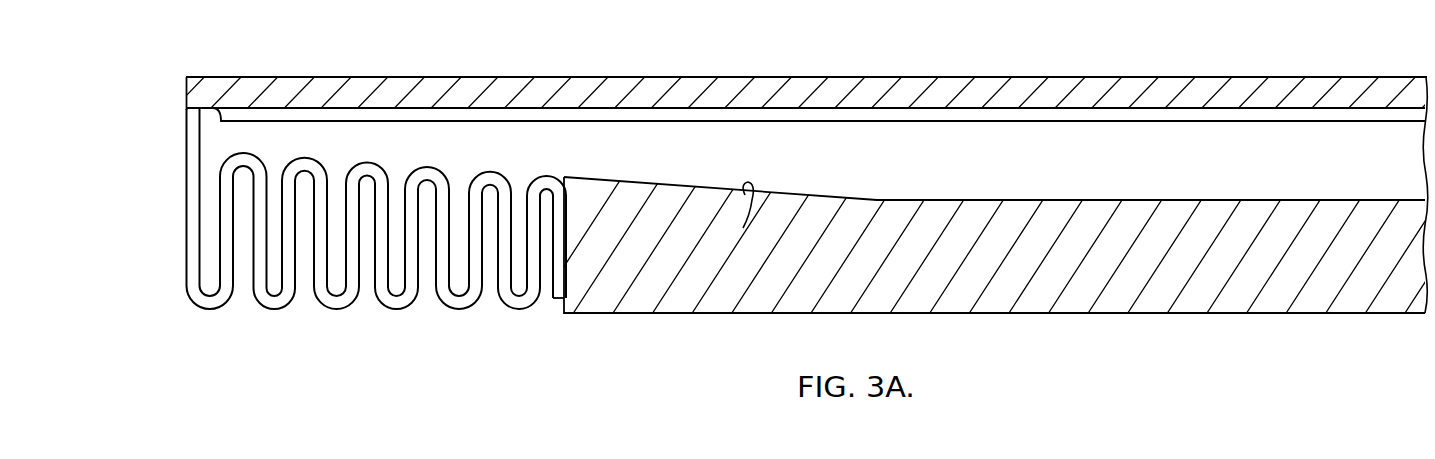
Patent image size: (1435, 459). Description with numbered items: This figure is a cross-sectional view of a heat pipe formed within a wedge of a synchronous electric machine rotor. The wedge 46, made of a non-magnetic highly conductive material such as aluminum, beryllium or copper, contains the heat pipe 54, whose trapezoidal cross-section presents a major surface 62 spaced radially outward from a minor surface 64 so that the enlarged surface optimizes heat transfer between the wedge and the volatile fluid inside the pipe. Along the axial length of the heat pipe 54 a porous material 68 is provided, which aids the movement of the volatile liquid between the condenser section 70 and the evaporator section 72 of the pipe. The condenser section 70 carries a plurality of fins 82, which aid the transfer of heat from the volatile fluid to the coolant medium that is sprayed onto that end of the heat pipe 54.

The wedge 46 is at (663, 282).
The heat pipe 54 is at (1057, 147).
The major surface 62 is at (799, 112).
The minor surface 64 is at (731, 212).
The porous material 68 is at (922, 110).
The condenser section 70 is at (186, 172).
The evaporator section 72 is at (1318, 77).
The fins 82 is at (276, 310).